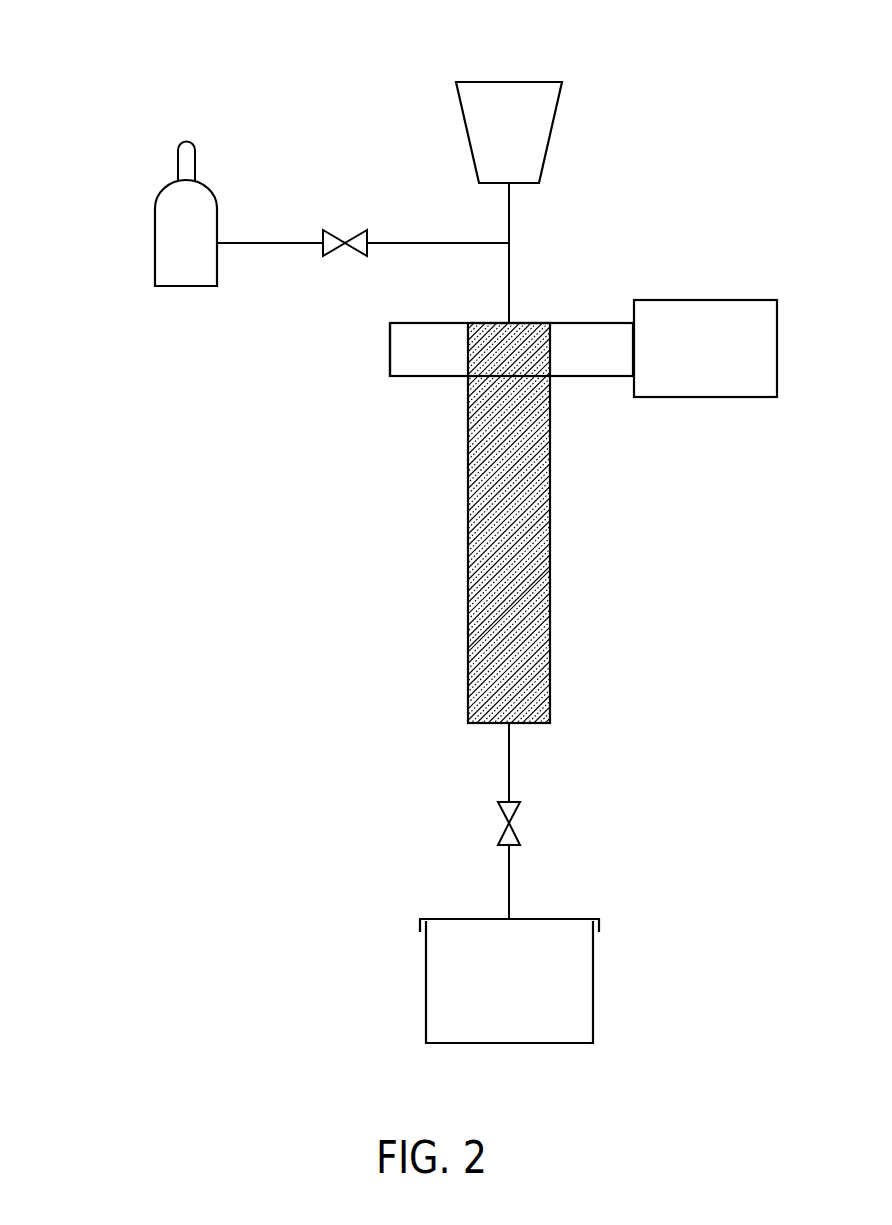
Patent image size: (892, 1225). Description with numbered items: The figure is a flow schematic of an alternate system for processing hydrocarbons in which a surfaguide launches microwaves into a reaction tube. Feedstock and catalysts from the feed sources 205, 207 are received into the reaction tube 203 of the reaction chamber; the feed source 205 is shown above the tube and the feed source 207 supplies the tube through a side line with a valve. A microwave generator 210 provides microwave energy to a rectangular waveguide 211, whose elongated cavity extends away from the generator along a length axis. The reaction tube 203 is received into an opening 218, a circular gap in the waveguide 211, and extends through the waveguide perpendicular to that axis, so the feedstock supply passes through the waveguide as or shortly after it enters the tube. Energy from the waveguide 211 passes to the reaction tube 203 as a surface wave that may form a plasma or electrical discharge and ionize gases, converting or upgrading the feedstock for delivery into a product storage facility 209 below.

The feed source 205 is at (508, 82).
The feed source 207 is at (155, 238).
The rectangular waveguide 211 is at (607, 323).
The opening 218 is at (466, 376).
The microwave generator 210 is at (704, 397).
The reaction tube 203 is at (485, 723).
The product storage facility 209 is at (426, 990).